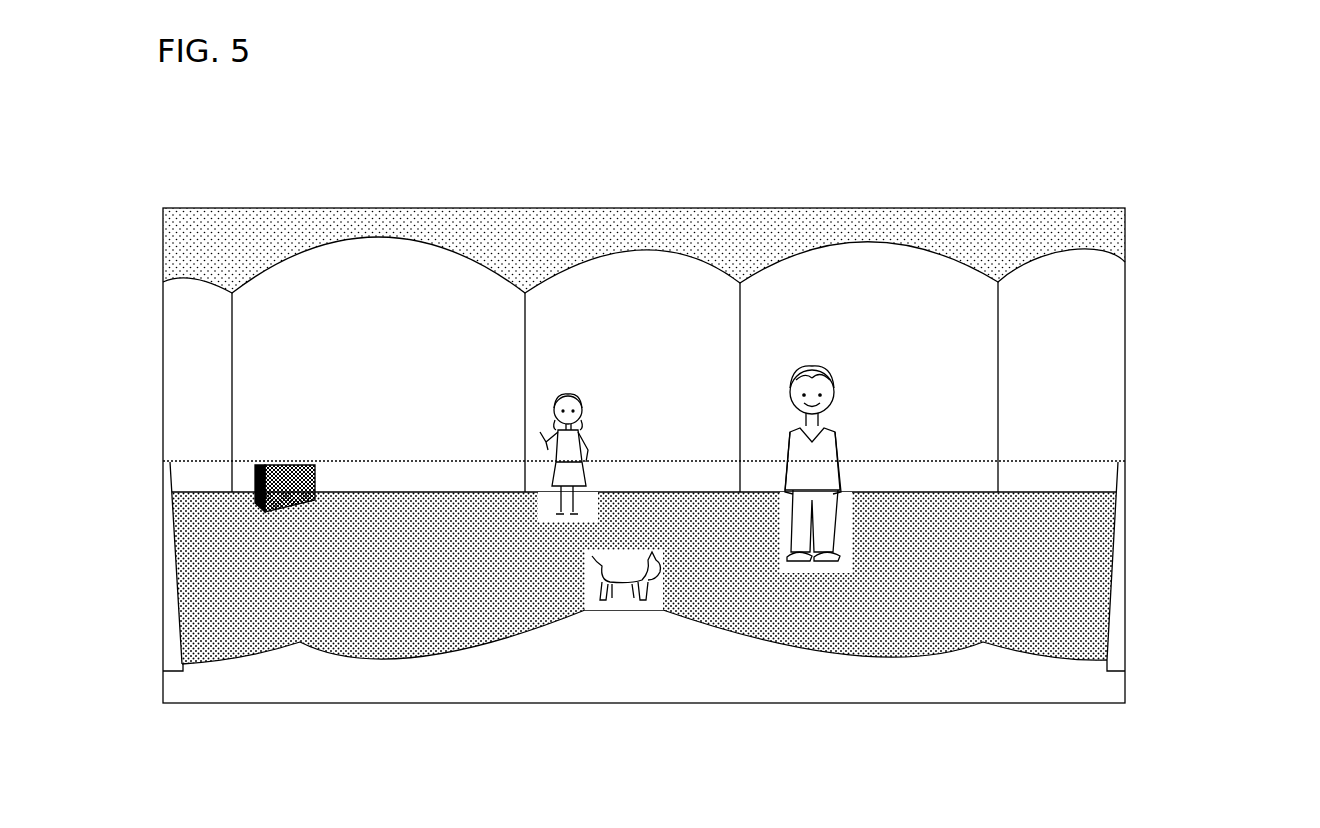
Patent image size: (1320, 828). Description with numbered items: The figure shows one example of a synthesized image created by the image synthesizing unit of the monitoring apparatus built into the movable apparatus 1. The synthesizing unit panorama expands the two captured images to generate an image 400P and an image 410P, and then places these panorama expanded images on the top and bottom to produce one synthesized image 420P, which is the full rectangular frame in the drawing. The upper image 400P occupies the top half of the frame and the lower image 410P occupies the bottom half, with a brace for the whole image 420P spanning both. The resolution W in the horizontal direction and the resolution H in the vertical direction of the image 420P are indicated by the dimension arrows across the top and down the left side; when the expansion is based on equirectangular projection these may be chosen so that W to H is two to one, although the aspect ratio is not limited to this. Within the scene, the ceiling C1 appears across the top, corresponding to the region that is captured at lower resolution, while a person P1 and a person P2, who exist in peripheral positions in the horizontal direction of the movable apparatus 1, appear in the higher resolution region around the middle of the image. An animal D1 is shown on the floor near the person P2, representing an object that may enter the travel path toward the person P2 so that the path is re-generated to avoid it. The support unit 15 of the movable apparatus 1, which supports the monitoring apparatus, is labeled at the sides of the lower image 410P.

The movable apparatus 1 is at (855, 665).
The support unit 15 is at (172, 605).
The image 400P is at (1138, 208).
The image 410P is at (1138, 463).
The image 420P is at (1242, 208).
The ceiling C1 is at (514, 230).
The animal D1 is at (648, 553).
The person P1 is at (835, 428).
The person P2 is at (583, 418).
The resolution in the horizontal direction W is at (1125, 163).
The resolution in the vertical direction H is at (115, 208).